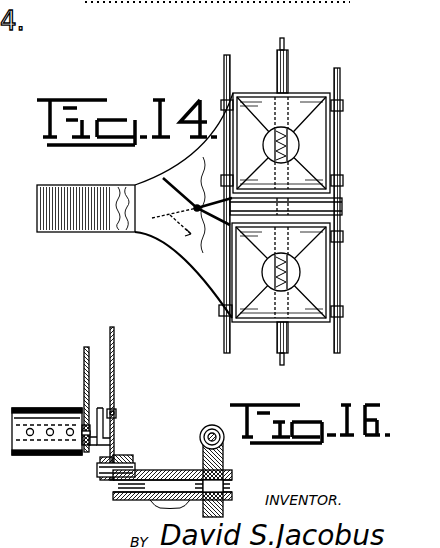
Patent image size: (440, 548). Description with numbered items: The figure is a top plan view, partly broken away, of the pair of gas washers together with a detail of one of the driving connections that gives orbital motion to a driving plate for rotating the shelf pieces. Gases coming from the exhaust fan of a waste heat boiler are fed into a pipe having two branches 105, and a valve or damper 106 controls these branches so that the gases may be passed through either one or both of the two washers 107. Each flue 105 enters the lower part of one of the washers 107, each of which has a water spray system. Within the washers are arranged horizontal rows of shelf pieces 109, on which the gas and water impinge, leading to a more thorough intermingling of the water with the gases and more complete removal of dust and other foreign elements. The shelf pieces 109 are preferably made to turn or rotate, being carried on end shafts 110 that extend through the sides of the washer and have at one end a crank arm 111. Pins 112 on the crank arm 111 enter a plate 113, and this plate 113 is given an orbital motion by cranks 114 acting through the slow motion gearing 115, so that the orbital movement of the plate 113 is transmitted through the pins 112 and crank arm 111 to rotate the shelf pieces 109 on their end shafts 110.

In FIG. 14, the branch 105 is at (217, 148).
In FIG. 14, the valve or damper 106 is at (180, 182).
In FIG. 14, the washer 107 is at (318, 152).
In FIG. 14, the plate 113 is at (0, 150).
In FIG. 16, the plate 113 is at (114, 356).
In FIG. 16, the shelf piece 109 is at (68, 392).
In FIG. 16, the end shaft 110 is at (82, 440).
In FIG. 16, the crank arm 111 is at (100, 410).
In FIG. 16, the pin 112 is at (117, 413).
In FIG. 16, the crank 114 is at (121, 500).
In FIG. 16, the slow motion gearing 115 is at (205, 455).